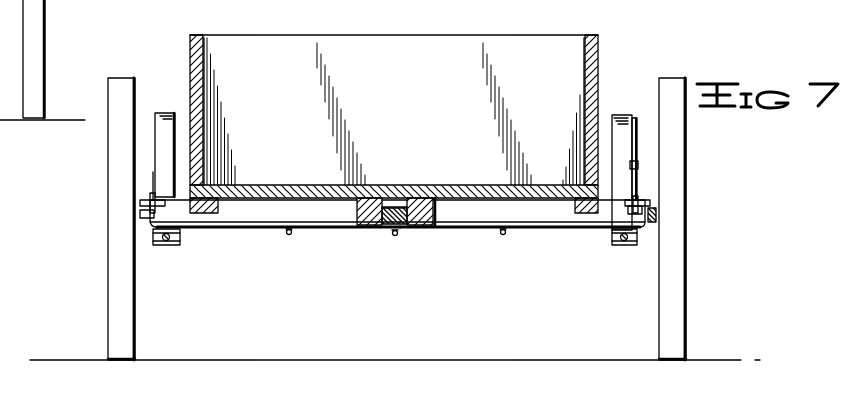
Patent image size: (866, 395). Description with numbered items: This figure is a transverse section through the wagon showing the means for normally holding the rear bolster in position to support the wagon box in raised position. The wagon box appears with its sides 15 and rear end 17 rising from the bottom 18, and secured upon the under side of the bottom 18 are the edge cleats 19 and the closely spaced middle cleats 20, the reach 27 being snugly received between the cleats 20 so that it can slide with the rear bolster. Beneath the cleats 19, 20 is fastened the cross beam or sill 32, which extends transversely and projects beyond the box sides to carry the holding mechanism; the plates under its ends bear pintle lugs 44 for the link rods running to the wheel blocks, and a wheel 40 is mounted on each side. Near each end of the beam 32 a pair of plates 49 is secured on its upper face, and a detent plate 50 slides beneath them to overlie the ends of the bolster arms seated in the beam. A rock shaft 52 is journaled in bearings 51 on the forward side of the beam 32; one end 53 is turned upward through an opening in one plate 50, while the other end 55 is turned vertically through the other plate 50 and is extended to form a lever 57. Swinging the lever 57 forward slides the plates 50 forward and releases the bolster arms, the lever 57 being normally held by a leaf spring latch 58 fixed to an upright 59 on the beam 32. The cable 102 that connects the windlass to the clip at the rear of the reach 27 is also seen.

The sides 15 is at (190, 64).
The rear end 17 is at (430, 35).
The bottom 18 is at (283, 188).
The cleat 19 is at (210, 213).
The cleats 20 is at (420, 188).
The reach 27 is at (388, 226).
The cross beam or sill 32 is at (332, 217).
The wheel 40 is at (110, 327).
The pintle lugs 44 is at (178, 246).
The plates 49 is at (138, 200).
The plate 50 is at (147, 207).
The bearings 51 is at (289, 235).
The rock shaft 52 is at (458, 225).
The upturned end 53 is at (152, 218).
The vertically turned end 55 is at (643, 213).
The lever 57 is at (638, 145).
The leaf spring latch 58 is at (638, 165).
The upright 59 is at (626, 114).
The cable 102 is at (397, 236).